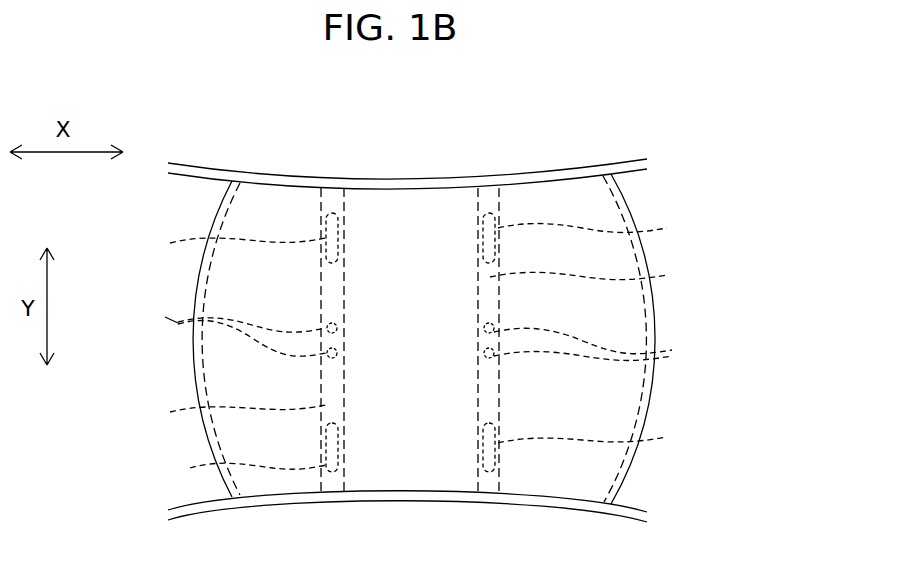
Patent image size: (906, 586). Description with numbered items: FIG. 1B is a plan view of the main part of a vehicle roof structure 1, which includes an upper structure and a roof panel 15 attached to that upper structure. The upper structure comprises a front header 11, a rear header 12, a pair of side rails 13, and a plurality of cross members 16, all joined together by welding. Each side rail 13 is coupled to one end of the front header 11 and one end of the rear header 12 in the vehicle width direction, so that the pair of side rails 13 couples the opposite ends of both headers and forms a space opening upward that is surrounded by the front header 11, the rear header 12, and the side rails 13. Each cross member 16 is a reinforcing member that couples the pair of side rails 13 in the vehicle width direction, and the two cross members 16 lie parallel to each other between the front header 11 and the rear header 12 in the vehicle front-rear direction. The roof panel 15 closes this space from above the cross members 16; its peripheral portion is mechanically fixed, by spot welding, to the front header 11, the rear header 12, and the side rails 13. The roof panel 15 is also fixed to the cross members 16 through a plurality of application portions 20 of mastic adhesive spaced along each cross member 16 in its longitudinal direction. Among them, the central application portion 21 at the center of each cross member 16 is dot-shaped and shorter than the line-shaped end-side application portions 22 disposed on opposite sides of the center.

The vehicle roof structure 1 is at (188, 118).
The front header 11 is at (212, 442).
The rear header 12 is at (617, 193).
The side rail 13 is at (407, 183).
The roof panel 15 is at (622, 312).
The cross member 16 is at (416, 342).
The application portion 20 is at (338, 240).
The central application portion 21 is at (419, 334).
The end-side application portion 22 is at (414, 350).